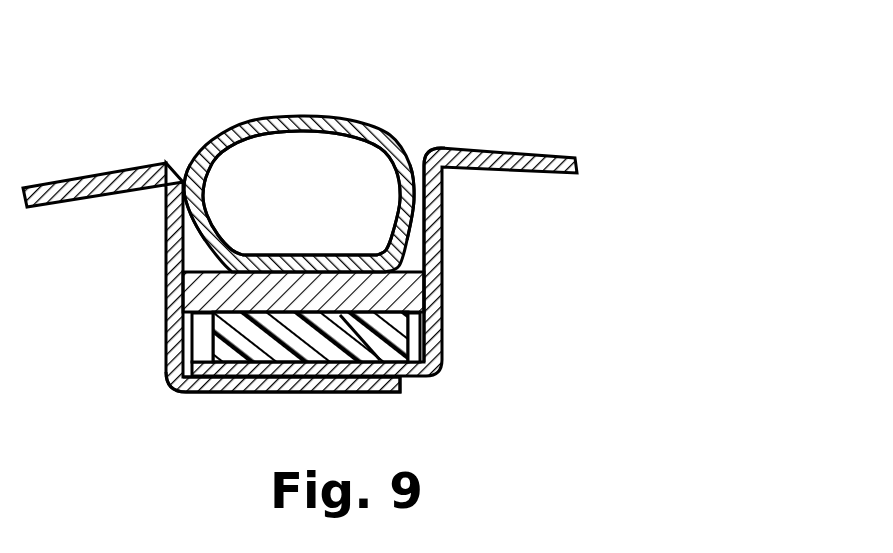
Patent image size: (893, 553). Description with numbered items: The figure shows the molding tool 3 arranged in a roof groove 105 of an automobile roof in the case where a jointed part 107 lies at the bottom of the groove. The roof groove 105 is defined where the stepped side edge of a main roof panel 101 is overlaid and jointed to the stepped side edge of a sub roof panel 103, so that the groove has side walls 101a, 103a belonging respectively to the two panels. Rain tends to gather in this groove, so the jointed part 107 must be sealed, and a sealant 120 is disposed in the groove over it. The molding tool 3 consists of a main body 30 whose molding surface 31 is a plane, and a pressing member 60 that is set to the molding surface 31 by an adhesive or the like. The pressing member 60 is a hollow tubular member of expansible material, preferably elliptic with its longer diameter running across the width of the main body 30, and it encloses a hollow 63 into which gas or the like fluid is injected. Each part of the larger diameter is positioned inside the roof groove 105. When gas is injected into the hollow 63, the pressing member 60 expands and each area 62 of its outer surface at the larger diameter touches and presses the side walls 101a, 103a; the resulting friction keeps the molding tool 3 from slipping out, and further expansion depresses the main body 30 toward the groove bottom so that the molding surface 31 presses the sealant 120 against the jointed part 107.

The molding tool 3 is at (299, 142).
The main body 30 is at (395, 292).
The molding surface 31 is at (200, 345).
The pressing member 60 is at (323, 125).
The area 62 is at (198, 158).
The hollow 63 is at (306, 162).
The main roof panel 101 is at (533, 150).
The side wall 101a is at (419, 180).
The sub roof panel 103 is at (88, 182).
The side wall 103a is at (189, 165).
The roof groove 105 is at (410, 258).
The jointed part 107 is at (278, 392).
The sealant 120 is at (362, 350).